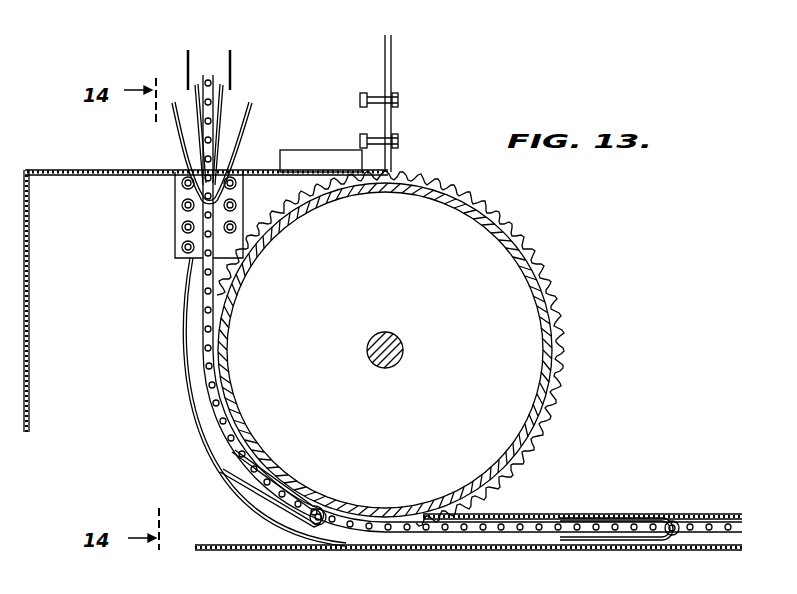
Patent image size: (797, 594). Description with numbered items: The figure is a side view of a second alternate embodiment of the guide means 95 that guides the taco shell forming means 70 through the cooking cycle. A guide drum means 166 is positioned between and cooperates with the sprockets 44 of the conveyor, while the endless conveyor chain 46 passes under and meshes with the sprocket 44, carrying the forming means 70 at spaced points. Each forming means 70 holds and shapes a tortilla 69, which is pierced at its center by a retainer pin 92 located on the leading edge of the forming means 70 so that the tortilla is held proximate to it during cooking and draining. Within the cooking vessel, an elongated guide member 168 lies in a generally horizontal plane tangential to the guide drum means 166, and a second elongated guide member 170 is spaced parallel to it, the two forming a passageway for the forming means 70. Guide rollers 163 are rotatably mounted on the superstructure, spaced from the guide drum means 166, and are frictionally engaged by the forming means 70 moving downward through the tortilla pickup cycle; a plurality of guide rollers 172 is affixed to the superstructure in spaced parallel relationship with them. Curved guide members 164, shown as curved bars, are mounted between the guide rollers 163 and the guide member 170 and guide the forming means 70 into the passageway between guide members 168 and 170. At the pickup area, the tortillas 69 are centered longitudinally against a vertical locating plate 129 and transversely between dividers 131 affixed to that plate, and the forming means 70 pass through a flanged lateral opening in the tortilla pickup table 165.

The conveyor driving sprocket 44 is at (505, 490).
The conveyor chain 46 is at (215, 72).
The tortilla 69 is at (236, 143).
The taco shell forming means 70 is at (238, 109).
The retainer pin 92 is at (330, 516).
The guide means 95 is at (172, 445).
The locating plate 129 is at (362, 106).
The divider 131 is at (312, 160).
The guide roller 163 is at (182, 226).
The curved guide member 164 is at (183, 375).
The tortilla pickup table 165 is at (77, 171).
The guide drum means 166 is at (522, 305).
The guide member 168 is at (545, 517).
The guide member 170 is at (270, 551).
The guide roller 172 is at (235, 201).